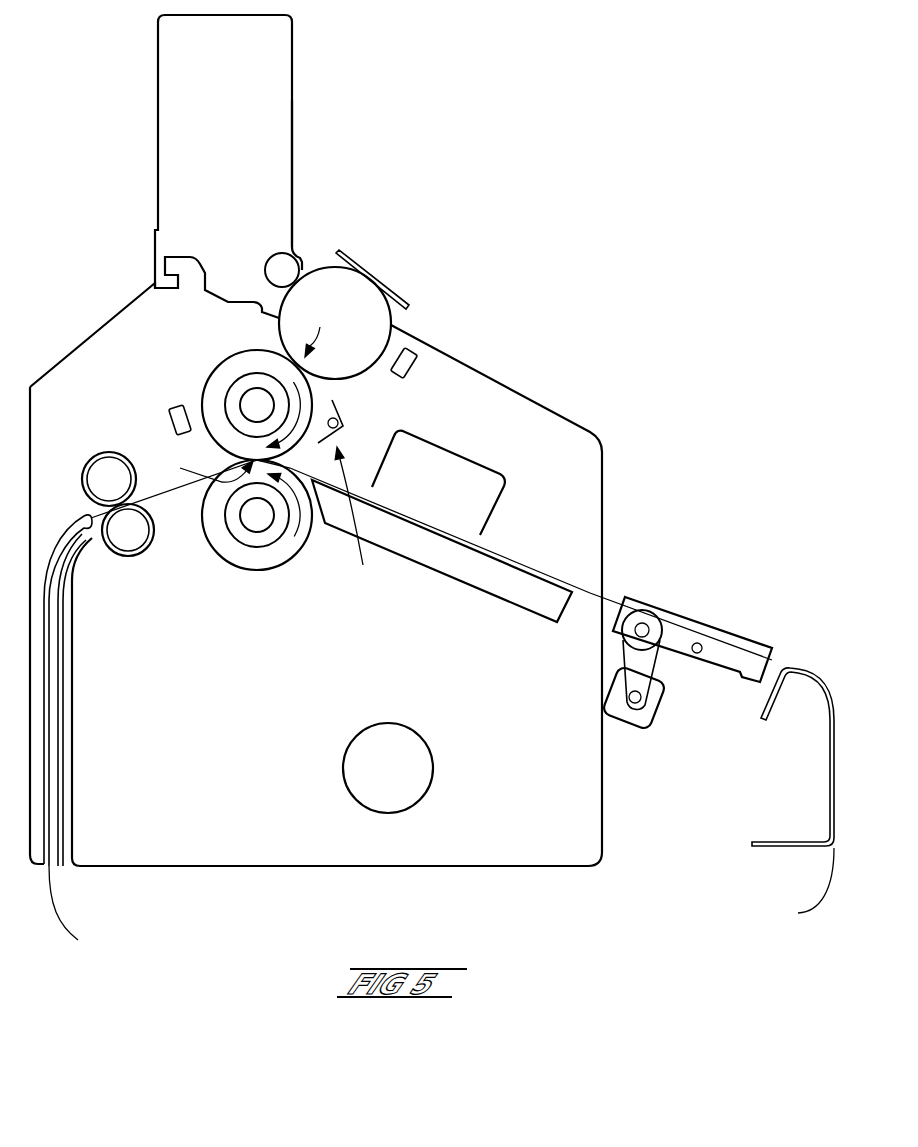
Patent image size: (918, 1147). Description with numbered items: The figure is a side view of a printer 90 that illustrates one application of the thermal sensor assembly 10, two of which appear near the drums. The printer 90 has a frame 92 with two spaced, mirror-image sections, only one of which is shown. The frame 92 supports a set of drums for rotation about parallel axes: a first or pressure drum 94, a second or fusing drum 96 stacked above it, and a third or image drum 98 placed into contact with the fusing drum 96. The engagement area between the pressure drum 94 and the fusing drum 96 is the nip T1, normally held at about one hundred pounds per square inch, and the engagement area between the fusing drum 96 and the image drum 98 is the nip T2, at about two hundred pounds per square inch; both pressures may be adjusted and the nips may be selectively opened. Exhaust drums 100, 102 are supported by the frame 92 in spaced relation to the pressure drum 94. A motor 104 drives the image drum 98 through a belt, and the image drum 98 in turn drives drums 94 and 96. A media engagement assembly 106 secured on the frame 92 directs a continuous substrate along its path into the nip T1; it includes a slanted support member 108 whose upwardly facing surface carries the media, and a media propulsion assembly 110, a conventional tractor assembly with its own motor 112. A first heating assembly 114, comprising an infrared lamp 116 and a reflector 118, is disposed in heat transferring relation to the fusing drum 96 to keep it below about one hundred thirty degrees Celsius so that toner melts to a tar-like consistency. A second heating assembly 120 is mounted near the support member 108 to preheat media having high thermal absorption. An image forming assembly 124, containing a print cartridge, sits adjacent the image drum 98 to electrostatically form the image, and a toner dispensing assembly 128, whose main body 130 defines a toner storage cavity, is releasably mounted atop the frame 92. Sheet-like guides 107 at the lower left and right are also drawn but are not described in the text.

The sensor assembly 10 is at (173, 403).
The printer 90 is at (528, 159).
The frame 92 is at (88, 372).
The first or pressure drum 94 is at (232, 568).
The second or fusing drum 96 is at (212, 370).
The third or image drum 98 is at (358, 312).
The exhaust drum 100 is at (92, 452).
The exhaust drum 102 is at (113, 557).
The motor 104 is at (362, 740).
The media engagement assembly 106 is at (687, 623).
The media guide 107 is at (71, 926).
The support member 108 is at (502, 572).
The media propulsion assembly 110 is at (662, 612).
The motor 112 is at (627, 727).
The first heating assembly 114 is at (361, 522).
The infrared lamp 116 is at (345, 428).
The reflector 118 is at (340, 416).
The second heating assembly 120 is at (514, 442).
The image forming assembly 124 is at (365, 267).
The toner dispensing assembly 128 is at (322, 69).
The main body 130 is at (293, 143).
The nip T1 is at (201, 468).
The nip T2 is at (322, 326).